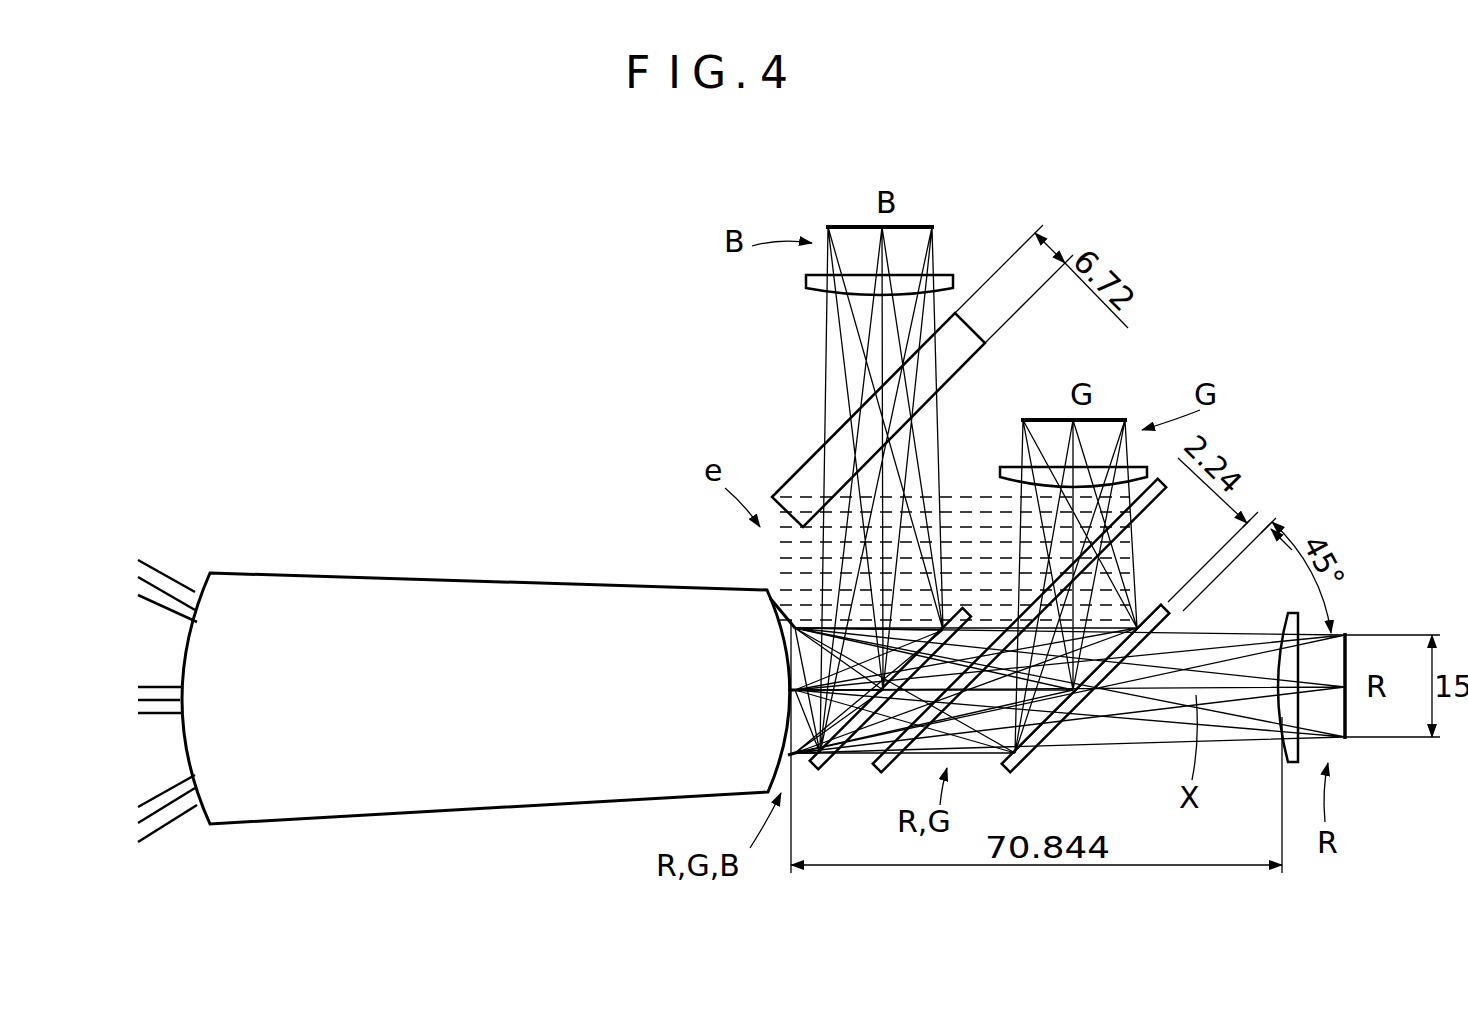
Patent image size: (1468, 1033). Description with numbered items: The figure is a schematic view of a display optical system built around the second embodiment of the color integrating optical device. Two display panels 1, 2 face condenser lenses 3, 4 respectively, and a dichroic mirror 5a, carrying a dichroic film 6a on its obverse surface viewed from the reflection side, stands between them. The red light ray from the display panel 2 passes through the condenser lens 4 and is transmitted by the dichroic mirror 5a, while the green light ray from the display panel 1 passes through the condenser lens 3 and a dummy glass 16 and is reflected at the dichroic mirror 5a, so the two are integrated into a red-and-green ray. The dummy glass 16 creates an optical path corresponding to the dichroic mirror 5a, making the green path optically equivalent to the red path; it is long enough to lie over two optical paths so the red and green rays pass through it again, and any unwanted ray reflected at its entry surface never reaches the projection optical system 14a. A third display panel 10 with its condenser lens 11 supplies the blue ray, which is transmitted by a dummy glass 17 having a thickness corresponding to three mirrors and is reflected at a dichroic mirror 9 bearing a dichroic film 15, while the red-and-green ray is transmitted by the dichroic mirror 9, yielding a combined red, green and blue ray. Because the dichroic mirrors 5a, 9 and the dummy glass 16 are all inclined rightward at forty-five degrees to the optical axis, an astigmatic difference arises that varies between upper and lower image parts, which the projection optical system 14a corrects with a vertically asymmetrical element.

The display panel 1 is at (1123, 420).
The display panel 2 is at (1350, 722).
The condenser lens 3 is at (1000, 468).
The condenser lens 4 is at (1293, 770).
The dichroic mirror 5a is at (1175, 612).
The dichroic film 6a is at (1008, 770).
The dichroic mirror 9 is at (822, 780).
The display panel 10 is at (852, 225).
The condenser lens 11 is at (805, 279).
The projection optical system 14a is at (510, 600).
The dichroic film 15 is at (793, 623).
The dummy glass 16 is at (1155, 492).
The dummy glass 17 is at (960, 357).